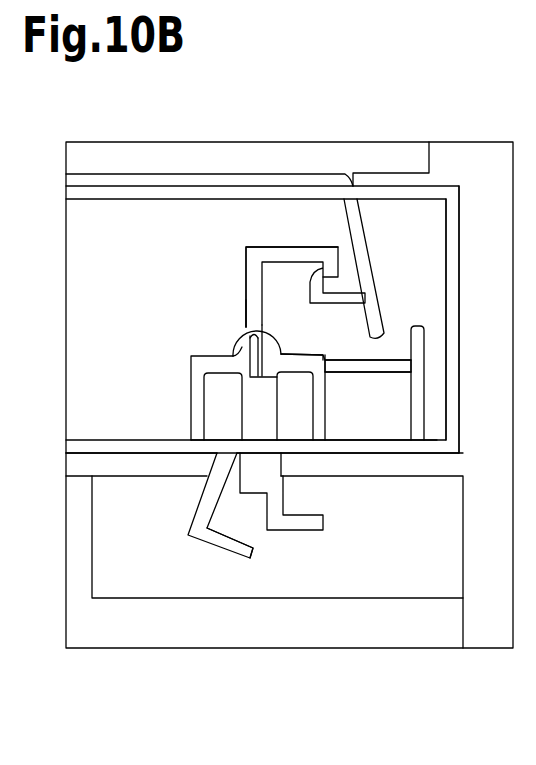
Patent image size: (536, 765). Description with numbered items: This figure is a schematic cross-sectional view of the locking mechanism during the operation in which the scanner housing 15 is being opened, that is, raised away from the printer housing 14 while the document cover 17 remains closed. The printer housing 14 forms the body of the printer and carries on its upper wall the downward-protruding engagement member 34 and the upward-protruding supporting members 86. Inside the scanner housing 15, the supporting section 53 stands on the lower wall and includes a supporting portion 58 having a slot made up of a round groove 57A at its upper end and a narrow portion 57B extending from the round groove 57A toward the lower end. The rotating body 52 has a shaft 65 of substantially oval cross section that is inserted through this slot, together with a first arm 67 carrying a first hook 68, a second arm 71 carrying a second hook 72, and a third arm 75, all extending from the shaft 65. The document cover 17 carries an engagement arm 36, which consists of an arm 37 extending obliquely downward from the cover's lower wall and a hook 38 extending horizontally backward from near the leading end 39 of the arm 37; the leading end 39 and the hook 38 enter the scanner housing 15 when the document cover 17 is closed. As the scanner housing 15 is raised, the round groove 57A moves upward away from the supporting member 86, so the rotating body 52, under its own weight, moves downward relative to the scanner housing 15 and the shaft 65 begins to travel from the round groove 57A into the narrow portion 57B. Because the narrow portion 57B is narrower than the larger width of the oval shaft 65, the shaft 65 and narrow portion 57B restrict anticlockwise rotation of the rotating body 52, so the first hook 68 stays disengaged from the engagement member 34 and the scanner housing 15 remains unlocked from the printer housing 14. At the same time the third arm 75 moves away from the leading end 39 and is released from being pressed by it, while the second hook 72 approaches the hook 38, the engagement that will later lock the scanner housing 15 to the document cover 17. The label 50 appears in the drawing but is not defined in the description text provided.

The printer housing 14 is at (463, 620).
The scanner housing 15 is at (462, 342).
The document cover 17 is at (430, 162).
The engagement member 34 is at (323, 525).
The engagement arm 36 is at (403, 275).
The arm 37 is at (375, 278).
The hook 38 is at (303, 247).
The leading end 39 is at (385, 328).
The connector 50 is at (178, 252).
The rotating body 52 is at (217, 302).
The supporting section 53 is at (185, 395).
The round groove 57A is at (237, 333).
The narrow portion 57B is at (233, 356).
The supporting portion 58 is at (283, 343).
The shaft 65 is at (247, 323).
The first arm 67 is at (197, 503).
The first hook 68 is at (253, 553).
The second arm 71 is at (246, 250).
The second hook 72 is at (327, 247).
The third arm 75 is at (362, 378).
The supporting member 86 is at (191, 417).